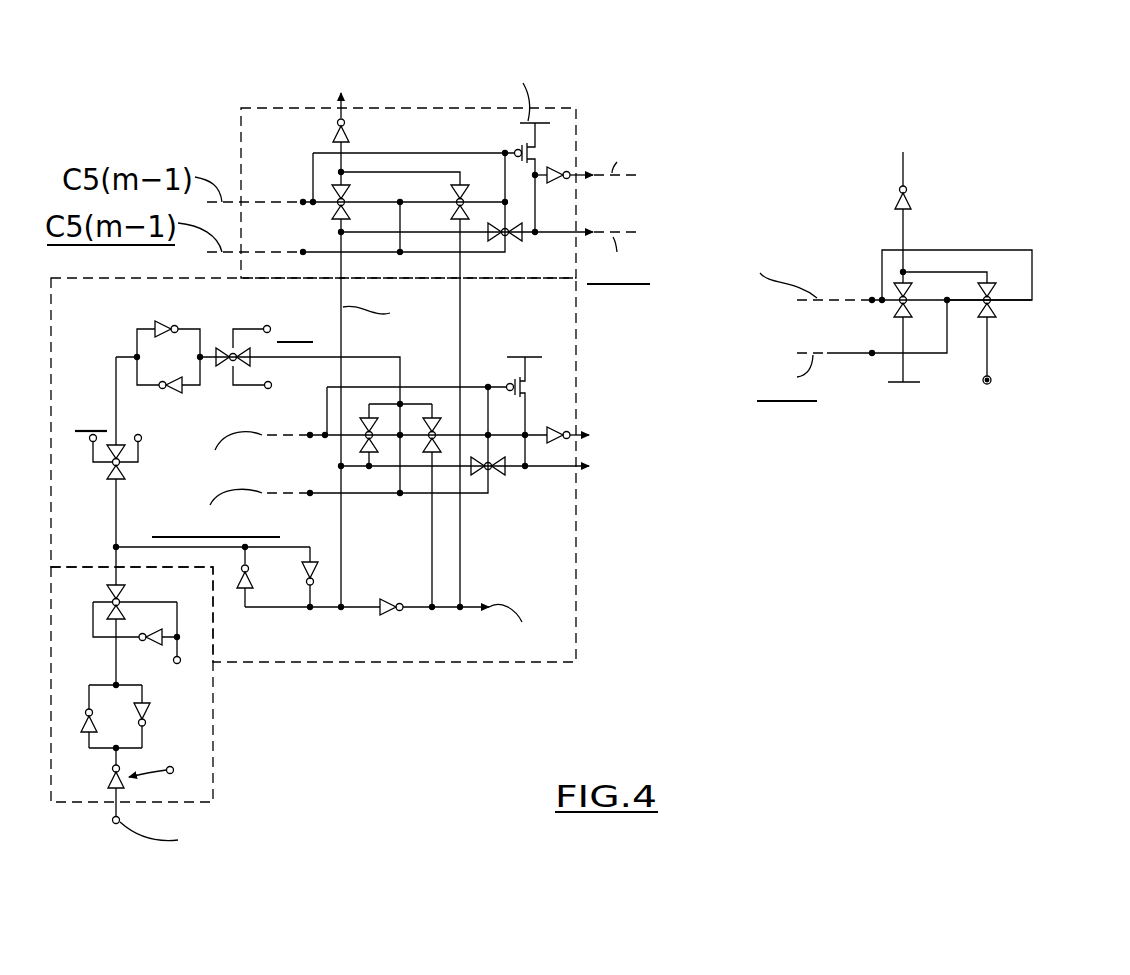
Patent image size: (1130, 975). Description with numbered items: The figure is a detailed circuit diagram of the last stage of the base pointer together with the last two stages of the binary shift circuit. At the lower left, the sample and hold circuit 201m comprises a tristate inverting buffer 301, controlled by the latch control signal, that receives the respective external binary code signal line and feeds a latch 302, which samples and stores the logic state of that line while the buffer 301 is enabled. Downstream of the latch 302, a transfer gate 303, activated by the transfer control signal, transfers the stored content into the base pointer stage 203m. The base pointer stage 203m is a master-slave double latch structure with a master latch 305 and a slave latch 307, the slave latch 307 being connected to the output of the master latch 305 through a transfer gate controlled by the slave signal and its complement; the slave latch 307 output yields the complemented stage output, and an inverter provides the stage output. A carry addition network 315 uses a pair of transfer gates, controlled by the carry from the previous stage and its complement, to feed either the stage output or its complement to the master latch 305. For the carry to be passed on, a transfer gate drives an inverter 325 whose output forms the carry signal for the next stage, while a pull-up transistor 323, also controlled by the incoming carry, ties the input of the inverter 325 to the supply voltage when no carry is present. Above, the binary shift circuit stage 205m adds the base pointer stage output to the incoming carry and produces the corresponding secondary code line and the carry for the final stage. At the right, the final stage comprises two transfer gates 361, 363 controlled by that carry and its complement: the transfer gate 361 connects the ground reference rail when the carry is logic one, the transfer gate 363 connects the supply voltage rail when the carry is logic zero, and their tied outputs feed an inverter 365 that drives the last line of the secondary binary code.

The binary shift circuit stage 205m is at (257, 108).
The base pointer stage 203m is at (480, 662).
The sample and hold circuit 201m is at (213, 712).
The master latch 305 is at (130, 340).
The transfer gate 303 is at (110, 598).
The latch 302 is at (161, 713).
The tristate inverting buffer 301 is at (106, 781).
The slave latch 307 is at (279, 621).
The carry addition network 315 is at (500, 515).
The pull-up transistor 323 is at (523, 387).
The inverter 325 is at (554, 427).
The transfer gate 363 is at (893, 282).
The inverter 365 is at (913, 200).
The transfer gate 361 is at (990, 283).